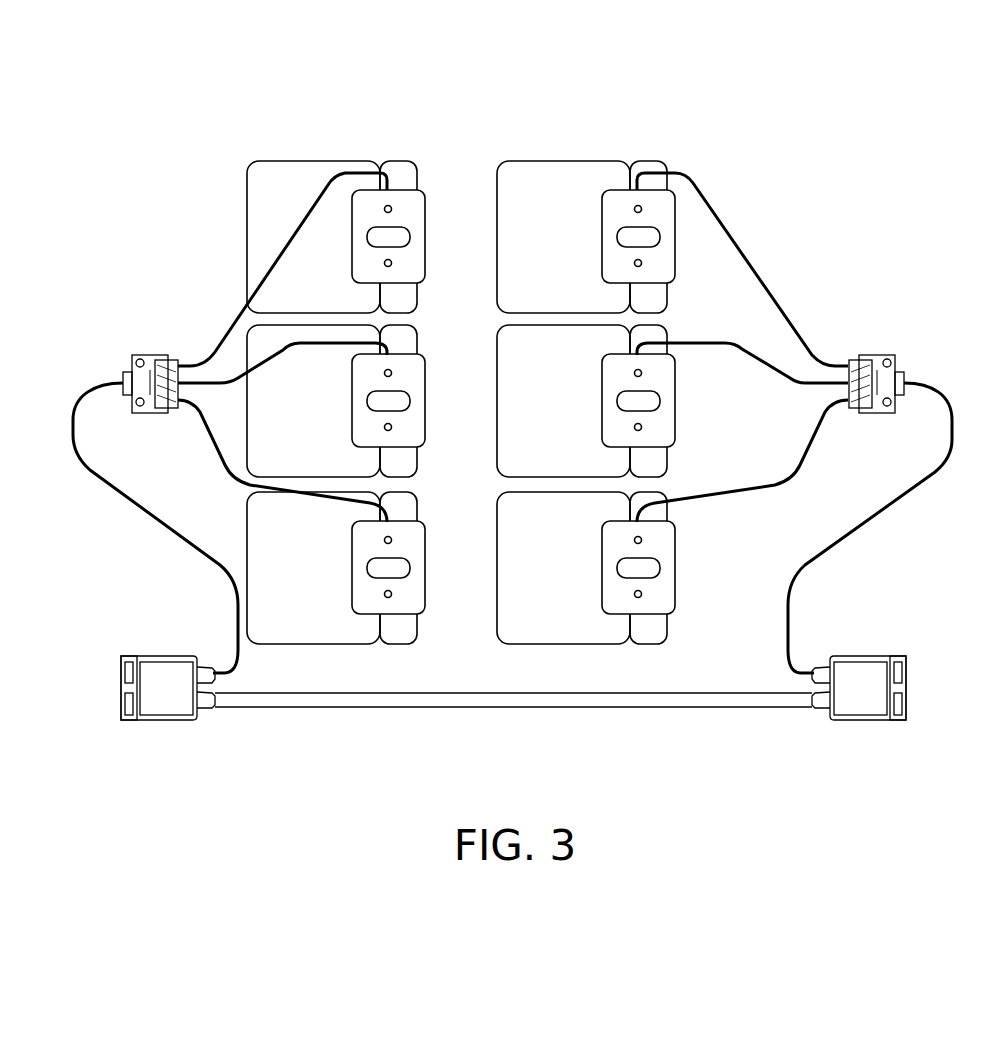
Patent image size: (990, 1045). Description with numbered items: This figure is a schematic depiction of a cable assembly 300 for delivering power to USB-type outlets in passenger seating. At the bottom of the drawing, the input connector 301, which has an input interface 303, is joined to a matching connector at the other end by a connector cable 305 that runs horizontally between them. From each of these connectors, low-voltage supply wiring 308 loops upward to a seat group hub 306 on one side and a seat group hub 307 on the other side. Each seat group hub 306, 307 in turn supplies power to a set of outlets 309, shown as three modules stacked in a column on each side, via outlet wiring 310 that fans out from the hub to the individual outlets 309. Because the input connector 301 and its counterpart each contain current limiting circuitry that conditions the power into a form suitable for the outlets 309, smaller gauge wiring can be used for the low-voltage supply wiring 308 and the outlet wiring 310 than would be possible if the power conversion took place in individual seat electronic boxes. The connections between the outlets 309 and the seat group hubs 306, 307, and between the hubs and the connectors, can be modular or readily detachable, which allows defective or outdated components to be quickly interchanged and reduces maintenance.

The cable assembly 300 is at (479, 112).
The input connector 301 is at (163, 697).
The input interface 303 is at (130, 685).
The connector cable 305 is at (512, 707).
The seat group hub 306 is at (140, 355).
The seat group hub 307 is at (888, 355).
The low-voltage supply wiring 308 is at (128, 497).
The outlets 309 is at (617, 200).
The outlet wiring 310 is at (727, 212).